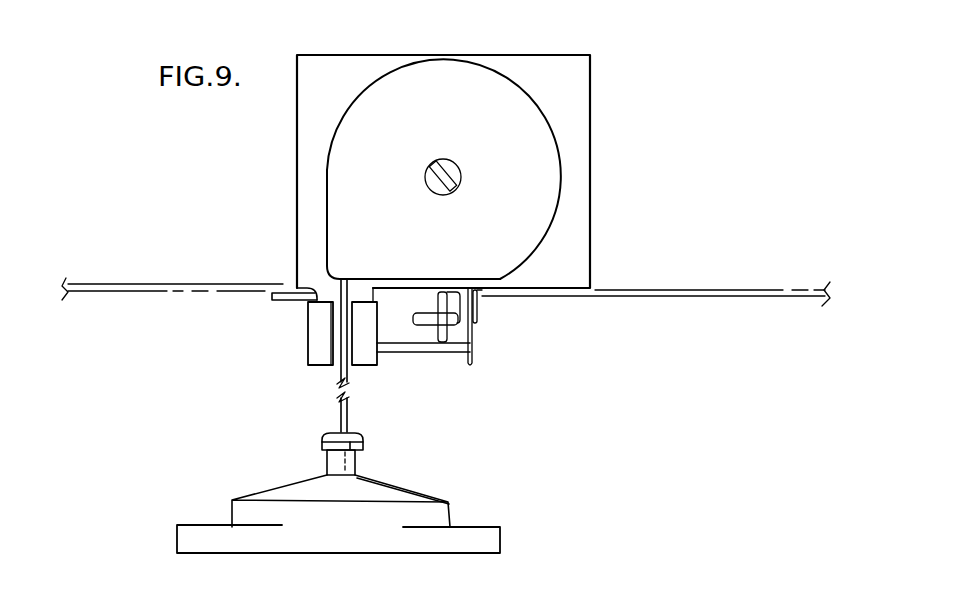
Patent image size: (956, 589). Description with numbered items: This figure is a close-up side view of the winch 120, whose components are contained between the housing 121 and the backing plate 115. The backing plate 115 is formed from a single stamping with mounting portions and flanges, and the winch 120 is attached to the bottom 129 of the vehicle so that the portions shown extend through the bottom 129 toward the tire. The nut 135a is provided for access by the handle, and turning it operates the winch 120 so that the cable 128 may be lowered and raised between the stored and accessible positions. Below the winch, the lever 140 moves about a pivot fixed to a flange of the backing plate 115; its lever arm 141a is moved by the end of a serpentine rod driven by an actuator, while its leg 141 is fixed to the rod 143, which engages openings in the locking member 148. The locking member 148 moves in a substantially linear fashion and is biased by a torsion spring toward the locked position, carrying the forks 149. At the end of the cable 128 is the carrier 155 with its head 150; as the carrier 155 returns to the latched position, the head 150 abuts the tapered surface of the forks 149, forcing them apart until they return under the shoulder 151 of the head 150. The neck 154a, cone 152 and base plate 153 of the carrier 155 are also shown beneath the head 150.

The backing plate 115 is at (593, 180).
The winch 120 is at (505, 78).
The housing 121 is at (335, 170).
The nut 135a is at (455, 170).
The bottom of vehicle 129 is at (713, 292).
The locking member 148 is at (310, 325).
The forks 149 is at (312, 345).
The cable 128 is at (333, 373).
The lever 140 is at (473, 340).
The rod 143 is at (410, 352).
The leg of lever 141 is at (473, 348).
The lever arm 141a is at (440, 308).
The head 150 is at (363, 440).
The carrier shoulder 151 is at (362, 448).
The neck 154a is at (327, 460).
The cone 152 is at (430, 495).
The base plate 153 is at (498, 543).
The carrier 155 is at (503, 503).